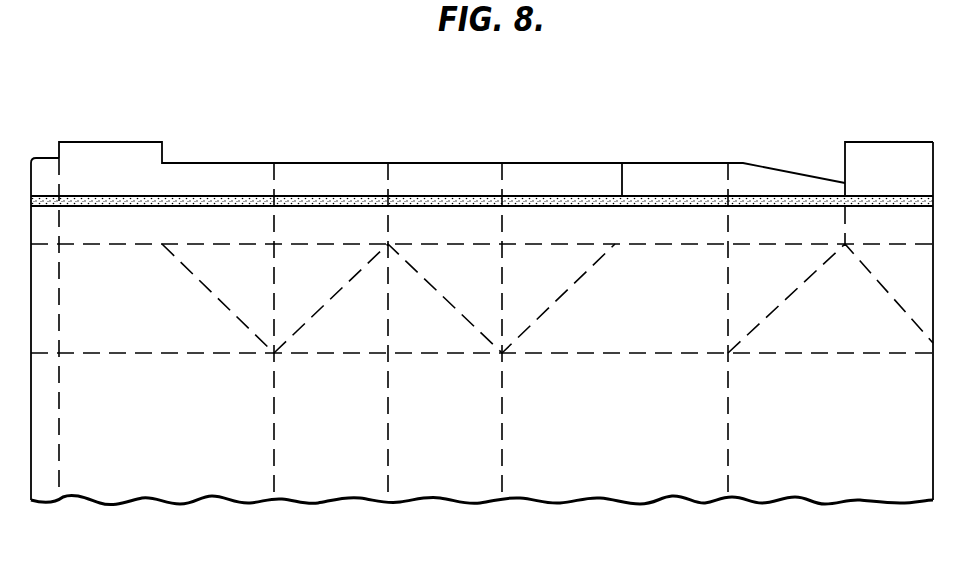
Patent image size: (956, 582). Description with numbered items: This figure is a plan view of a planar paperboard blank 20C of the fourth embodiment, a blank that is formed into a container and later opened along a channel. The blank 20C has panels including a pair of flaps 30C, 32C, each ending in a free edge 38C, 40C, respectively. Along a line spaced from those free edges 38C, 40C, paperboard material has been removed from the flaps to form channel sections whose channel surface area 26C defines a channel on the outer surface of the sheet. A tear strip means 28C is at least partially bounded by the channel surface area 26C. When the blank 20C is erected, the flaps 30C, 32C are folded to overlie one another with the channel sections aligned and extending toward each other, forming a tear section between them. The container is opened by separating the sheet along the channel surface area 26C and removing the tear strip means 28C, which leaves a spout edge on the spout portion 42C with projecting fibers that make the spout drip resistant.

The planar blank 20C is at (25, 440).
The channel surface area 26C is at (191, 196).
The tear strip means 28C is at (457, 188).
The flap 30C is at (112, 220).
The flap 32C is at (629, 222).
The free edge 38C is at (123, 140).
The free edge 40C is at (547, 163).
The spout portion 42C is at (406, 222).